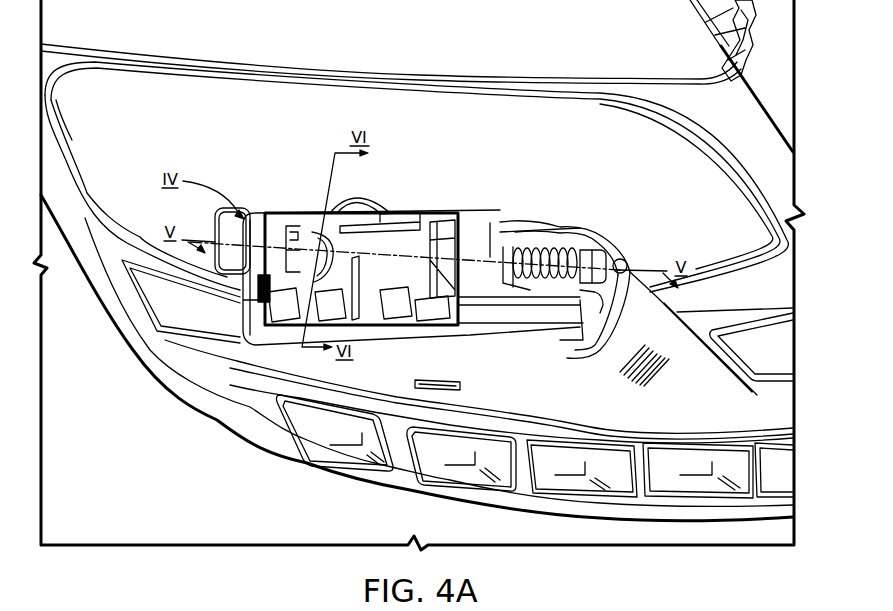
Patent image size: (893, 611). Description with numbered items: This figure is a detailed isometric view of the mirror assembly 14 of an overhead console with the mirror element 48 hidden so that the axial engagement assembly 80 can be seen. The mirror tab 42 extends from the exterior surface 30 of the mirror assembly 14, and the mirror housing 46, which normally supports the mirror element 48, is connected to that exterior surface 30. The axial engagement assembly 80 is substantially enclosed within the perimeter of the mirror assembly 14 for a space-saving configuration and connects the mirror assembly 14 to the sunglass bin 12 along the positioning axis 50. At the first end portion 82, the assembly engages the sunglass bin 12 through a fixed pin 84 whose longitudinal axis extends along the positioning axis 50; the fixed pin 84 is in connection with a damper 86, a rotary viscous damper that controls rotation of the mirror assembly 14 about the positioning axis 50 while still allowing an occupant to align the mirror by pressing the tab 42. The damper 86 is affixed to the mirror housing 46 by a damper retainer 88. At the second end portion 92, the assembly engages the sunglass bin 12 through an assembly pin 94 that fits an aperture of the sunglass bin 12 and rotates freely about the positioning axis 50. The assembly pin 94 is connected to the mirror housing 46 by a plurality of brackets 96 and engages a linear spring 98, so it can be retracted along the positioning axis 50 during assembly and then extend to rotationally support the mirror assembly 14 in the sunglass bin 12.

The sunglass bin 12 is at (653, 163).
The mirror assembly 14 is at (337, 377).
The exterior surface 30 is at (565, 353).
The mirror tab 42 is at (417, 392).
The mirror housing 46 is at (572, 362).
The mirror element 48 is at (235, 305).
The positioning axis 50 is at (655, 297).
The axial engagement assembly 80 is at (528, 242).
The first end portion 82 is at (240, 287).
The fixed pin 84 is at (275, 214).
The damper 86 is at (380, 200).
The damper retainer 88 is at (350, 200).
The second end portion 92 is at (622, 327).
The assembly pin 94 is at (595, 257).
The brackets 96 is at (513, 288).
The linear spring 98 is at (562, 250).